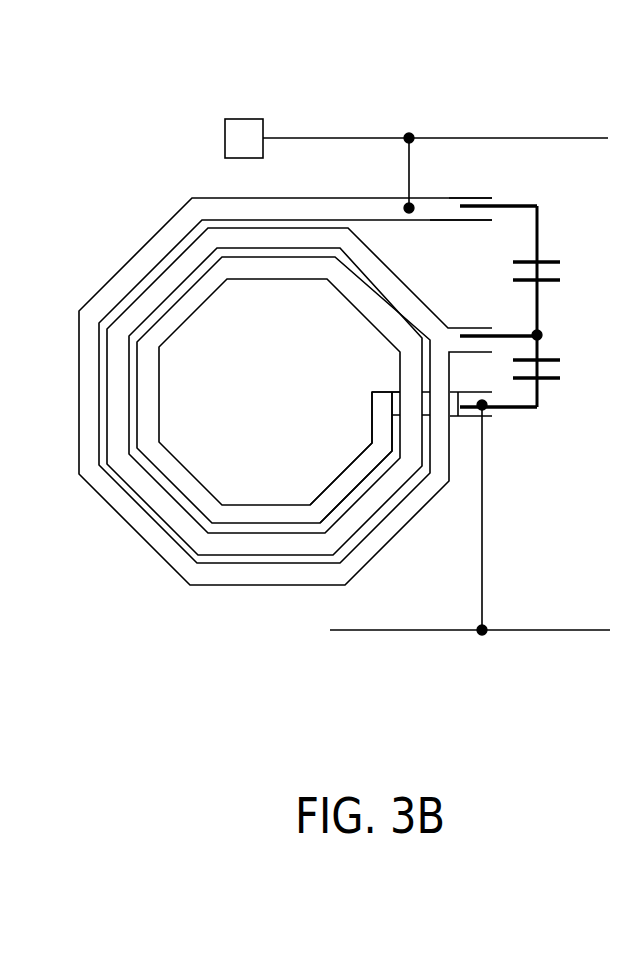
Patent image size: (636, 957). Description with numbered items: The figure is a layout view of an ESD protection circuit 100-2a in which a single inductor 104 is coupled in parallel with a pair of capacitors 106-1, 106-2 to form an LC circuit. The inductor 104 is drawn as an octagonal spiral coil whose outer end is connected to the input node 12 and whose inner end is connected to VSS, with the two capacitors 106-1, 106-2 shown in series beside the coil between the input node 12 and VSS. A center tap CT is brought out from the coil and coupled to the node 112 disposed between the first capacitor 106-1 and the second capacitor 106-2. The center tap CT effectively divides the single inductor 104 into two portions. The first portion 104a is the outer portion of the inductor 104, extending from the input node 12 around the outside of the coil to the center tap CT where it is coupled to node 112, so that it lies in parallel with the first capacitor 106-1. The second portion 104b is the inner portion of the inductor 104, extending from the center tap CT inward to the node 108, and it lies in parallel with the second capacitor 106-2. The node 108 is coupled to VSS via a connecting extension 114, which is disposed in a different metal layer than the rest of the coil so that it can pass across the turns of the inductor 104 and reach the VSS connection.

The ESD protection circuit 100-2a is at (525, 107).
The input node 12 is at (225, 136).
The single inductor 104 is at (98, 250).
The first portion of inductor 104a is at (172, 212).
The second portion of inductor 104b is at (338, 474).
The connecting extension 114 is at (393, 392).
The first capacitor 106-1 is at (560, 262).
The second capacitor 106-2 is at (558, 380).
The node 112 is at (543, 335).
The node 108 is at (485, 408).
The center tap CT is at (465, 328).
The element VSS is at (439, 631).